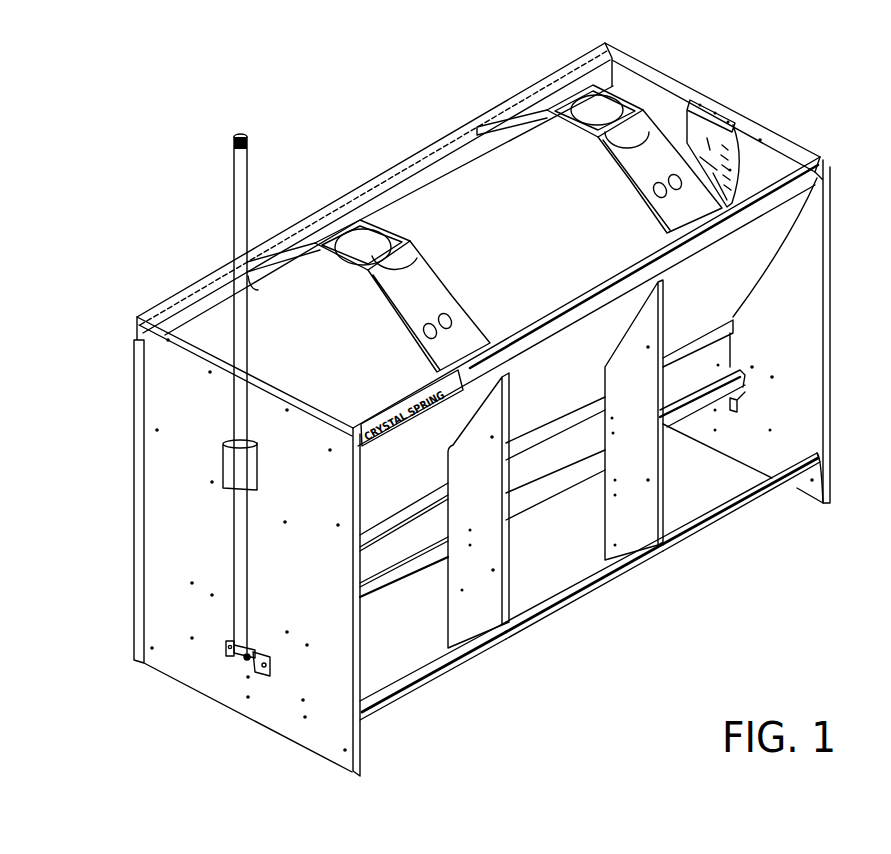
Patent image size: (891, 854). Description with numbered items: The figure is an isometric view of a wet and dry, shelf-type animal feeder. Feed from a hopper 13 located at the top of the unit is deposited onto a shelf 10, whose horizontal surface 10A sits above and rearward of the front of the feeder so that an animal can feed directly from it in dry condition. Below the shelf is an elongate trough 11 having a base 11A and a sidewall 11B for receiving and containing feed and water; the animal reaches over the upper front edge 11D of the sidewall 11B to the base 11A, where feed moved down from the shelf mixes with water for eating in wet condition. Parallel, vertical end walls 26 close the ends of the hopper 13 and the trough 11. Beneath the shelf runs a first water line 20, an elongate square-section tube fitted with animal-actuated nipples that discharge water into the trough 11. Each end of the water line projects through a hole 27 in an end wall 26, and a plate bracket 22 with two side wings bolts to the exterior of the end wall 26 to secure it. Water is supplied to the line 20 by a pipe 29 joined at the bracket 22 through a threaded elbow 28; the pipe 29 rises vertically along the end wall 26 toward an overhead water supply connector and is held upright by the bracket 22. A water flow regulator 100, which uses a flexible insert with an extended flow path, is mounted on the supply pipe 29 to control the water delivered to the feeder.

The shelf 10 is at (547, 473).
The horizontal surface of the shelf 10A is at (382, 555).
The trough 11 is at (616, 589).
The base 11A is at (367, 682).
The sidewall 11B is at (500, 650).
The upper front edge 11D is at (566, 603).
The hopper 13 is at (564, 352).
The first water line 20 is at (247, 675).
The bracket 22 is at (262, 673).
The end wall 26 is at (300, 730).
The hole 27 is at (268, 654).
The elbow 28 is at (247, 658).
The pipe 29 is at (243, 514).
The water flow regulator 100 is at (252, 471).